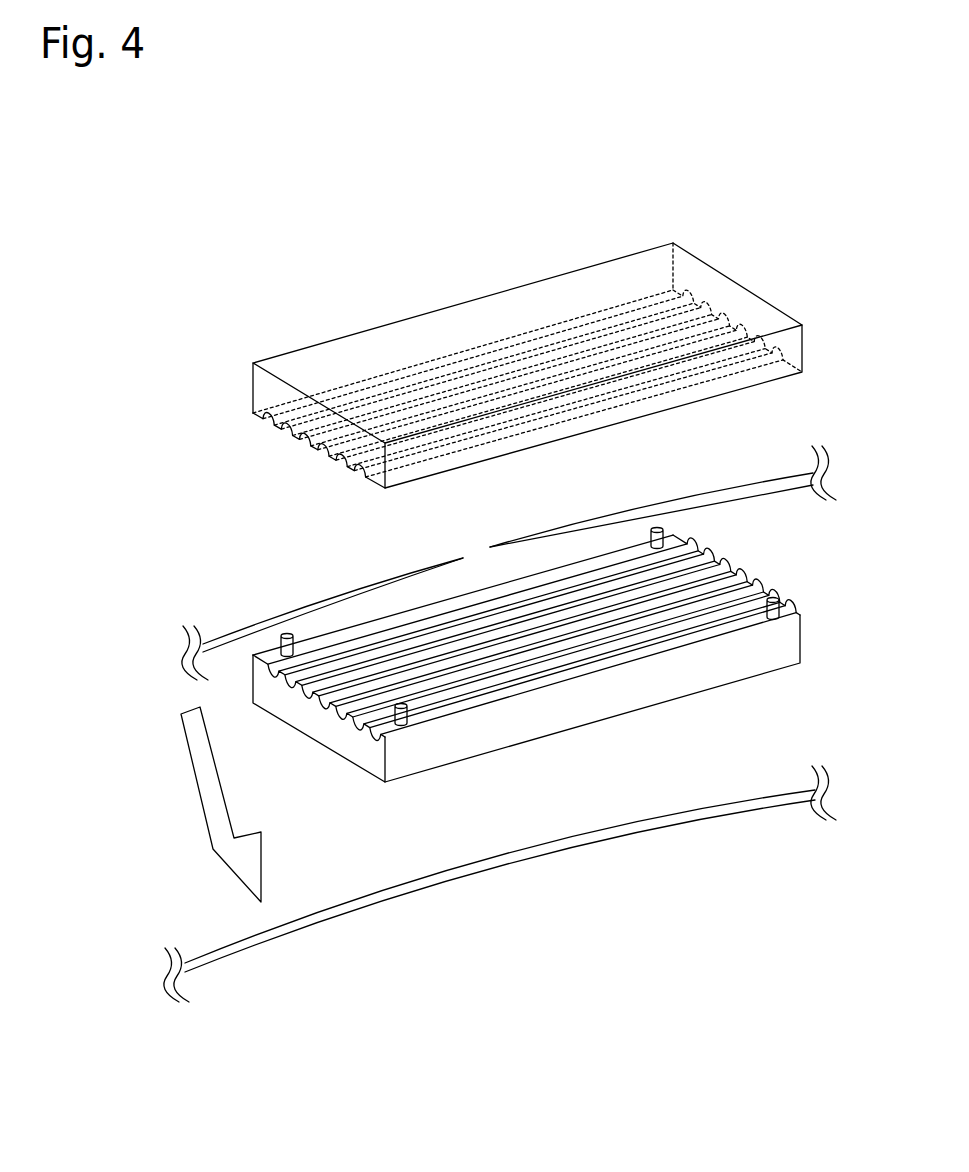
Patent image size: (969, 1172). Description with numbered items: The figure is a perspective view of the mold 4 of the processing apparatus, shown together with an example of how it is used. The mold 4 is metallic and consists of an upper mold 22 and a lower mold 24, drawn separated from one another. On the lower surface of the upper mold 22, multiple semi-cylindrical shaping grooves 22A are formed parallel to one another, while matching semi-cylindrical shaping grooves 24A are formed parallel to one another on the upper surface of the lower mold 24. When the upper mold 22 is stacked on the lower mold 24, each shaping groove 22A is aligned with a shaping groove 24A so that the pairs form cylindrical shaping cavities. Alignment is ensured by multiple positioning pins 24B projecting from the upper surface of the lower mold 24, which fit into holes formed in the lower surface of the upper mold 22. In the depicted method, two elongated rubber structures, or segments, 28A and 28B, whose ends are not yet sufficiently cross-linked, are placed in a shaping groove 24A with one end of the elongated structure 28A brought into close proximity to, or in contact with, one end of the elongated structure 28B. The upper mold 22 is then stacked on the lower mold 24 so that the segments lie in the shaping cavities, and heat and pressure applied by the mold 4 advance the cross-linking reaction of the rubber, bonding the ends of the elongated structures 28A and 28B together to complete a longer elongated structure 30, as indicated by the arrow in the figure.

The mold 4 is at (787, 212).
The upper mold 22 is at (487, 344).
The shaping grooves 22A is at (360, 477).
The lower mold 24 is at (560, 659).
The shaping grooves 24A is at (791, 603).
The positioning pins 24B is at (407, 720).
The elongated structure 28A is at (285, 612).
The elongated structure 28B is at (753, 490).
The elongated structure 30 is at (368, 903).